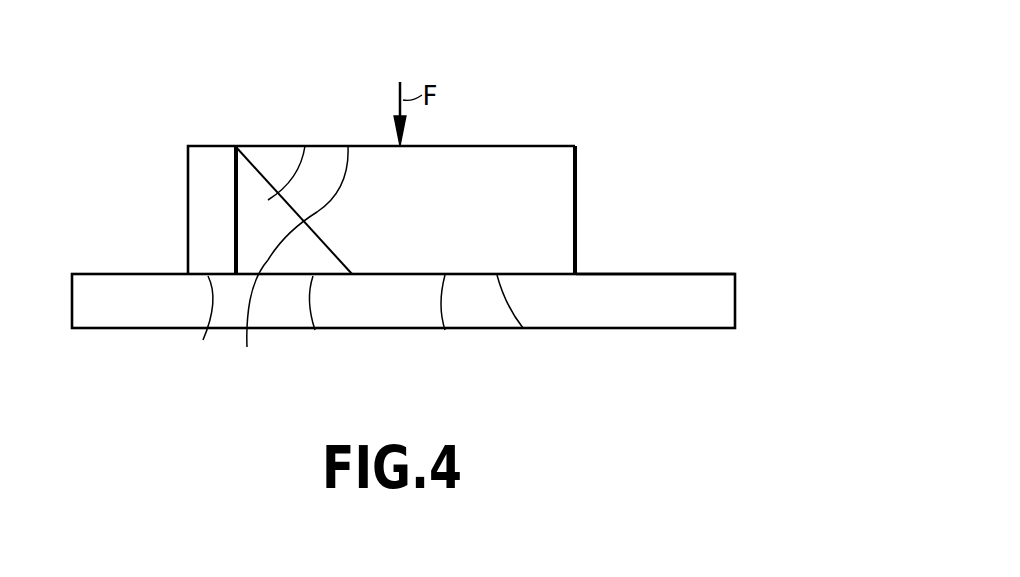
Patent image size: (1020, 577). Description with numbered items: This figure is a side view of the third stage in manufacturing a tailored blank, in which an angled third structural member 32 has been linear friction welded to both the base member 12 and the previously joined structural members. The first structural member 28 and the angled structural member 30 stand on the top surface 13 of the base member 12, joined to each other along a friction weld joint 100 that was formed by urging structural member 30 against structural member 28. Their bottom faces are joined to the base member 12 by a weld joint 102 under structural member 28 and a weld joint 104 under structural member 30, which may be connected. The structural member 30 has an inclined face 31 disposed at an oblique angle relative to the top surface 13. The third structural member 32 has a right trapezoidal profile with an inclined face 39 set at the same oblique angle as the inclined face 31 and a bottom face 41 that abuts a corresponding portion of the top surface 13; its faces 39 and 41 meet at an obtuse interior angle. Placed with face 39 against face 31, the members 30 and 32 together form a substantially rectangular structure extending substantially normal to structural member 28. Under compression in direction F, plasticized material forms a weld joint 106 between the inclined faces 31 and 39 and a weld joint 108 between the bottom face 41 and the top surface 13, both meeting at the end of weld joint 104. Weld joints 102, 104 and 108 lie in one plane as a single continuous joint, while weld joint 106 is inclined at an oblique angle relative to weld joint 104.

The base member 12 is at (737, 302).
The top surface 13 is at (673, 274).
The structural member 28 is at (188, 205).
The structural member 30 is at (305, 146).
The inclined face 31 is at (333, 245).
The angled third structural member 32 is at (507, 146).
The inclined face 39 is at (248, 324).
The bottom face 41 is at (445, 330).
The friction weld joint 100 is at (236, 248).
The weld joint 102 is at (203, 340).
The weld joint 104 is at (315, 330).
The weld joint 106 is at (348, 146).
The weld joint 108 is at (523, 328).